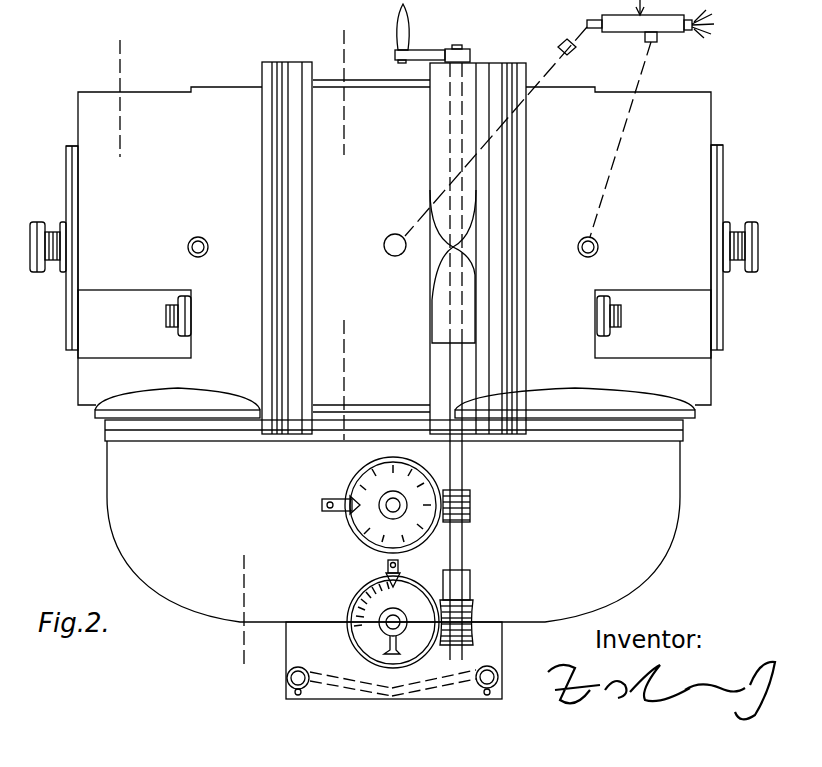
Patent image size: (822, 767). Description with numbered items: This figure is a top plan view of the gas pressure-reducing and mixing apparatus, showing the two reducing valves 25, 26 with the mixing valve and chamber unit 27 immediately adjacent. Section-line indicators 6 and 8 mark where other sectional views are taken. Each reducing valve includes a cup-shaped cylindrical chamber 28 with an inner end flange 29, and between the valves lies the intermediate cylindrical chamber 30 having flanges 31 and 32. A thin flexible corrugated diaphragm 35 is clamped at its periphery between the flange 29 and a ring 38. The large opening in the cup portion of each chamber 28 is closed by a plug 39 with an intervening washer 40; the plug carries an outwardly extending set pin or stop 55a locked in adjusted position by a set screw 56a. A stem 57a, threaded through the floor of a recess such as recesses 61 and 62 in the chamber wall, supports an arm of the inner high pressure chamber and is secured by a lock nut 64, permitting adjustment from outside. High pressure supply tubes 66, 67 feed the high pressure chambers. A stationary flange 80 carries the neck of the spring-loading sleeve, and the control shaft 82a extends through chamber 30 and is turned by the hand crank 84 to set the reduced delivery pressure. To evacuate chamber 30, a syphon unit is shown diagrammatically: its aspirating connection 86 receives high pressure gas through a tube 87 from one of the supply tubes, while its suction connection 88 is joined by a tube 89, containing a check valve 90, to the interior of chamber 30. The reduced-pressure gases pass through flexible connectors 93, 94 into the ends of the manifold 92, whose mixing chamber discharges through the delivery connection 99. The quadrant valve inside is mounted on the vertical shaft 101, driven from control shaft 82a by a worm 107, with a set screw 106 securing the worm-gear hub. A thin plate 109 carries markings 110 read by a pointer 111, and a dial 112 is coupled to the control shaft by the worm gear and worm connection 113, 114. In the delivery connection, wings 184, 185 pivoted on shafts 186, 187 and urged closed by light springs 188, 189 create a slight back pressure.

The section line 6- 6 is at (100, 70).
The section line 8- 8 is at (362, 48).
The reducing valve 25 is at (682, 90).
The reducing valve 26 is at (218, 84).
The mixing valve and chamber unit 27 is at (194, 610).
The cylindrical chamber 28 is at (422, 186).
The inner end flange 29 is at (272, 64).
The intermediate cylindrical chamber 30 is at (361, 82).
The flange 31 is at (481, 70).
The flange 32 is at (303, 66).
The corrugated plate or diaphragm 35 is at (283, 64).
The ring 38 is at (290, 436).
The plug 39 is at (67, 163).
The washer 40 is at (72, 146).
The set pin or stop 55a is at (54, 262).
The set screw 56a is at (62, 224).
The stem 57a is at (165, 318).
The recess 61 is at (166, 92).
The recess 62 is at (394, 324).
The lock screw or nut 64 is at (182, 337).
The high pressure supply tube 66 is at (600, 247).
The high pressure supply tube 67 is at (188, 245).
The flange 80 is at (493, 218).
The control shaft 82a is at (466, 462).
The hand crank 84 is at (408, 25).
The aspirating connection 86 is at (658, 37).
The tube 87 is at (626, 132).
The connection 88 is at (596, 20).
The tube 89 is at (535, 77).
The check valve 90 is at (577, 49).
The manifold 92 is at (394, 521).
The flexible connector 93 is at (108, 421).
The flexible connector 94 is at (682, 425).
The delivery connection or pipe 99 is at (286, 660).
The vertical shaft 101 is at (400, 622).
The set screw 106 is at (400, 650).
The worm 107 is at (475, 612).
The thin plate 109 is at (450, 596).
The markings 110 is at (366, 582).
The pointer 111 is at (400, 577).
The dial 112 is at (372, 476).
The worm gear 113 is at (440, 535).
The worm 114 is at (472, 502).
The wing 184 is at (328, 686).
The wing 185 is at (440, 690).
The shaft 186 is at (292, 692).
The shaft 187 is at (497, 672).
The light spring 188 is at (302, 668).
The light spring 189 is at (498, 688).